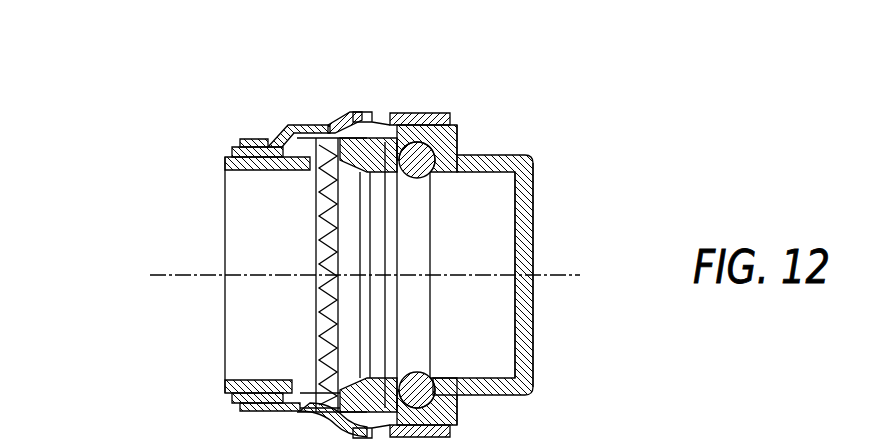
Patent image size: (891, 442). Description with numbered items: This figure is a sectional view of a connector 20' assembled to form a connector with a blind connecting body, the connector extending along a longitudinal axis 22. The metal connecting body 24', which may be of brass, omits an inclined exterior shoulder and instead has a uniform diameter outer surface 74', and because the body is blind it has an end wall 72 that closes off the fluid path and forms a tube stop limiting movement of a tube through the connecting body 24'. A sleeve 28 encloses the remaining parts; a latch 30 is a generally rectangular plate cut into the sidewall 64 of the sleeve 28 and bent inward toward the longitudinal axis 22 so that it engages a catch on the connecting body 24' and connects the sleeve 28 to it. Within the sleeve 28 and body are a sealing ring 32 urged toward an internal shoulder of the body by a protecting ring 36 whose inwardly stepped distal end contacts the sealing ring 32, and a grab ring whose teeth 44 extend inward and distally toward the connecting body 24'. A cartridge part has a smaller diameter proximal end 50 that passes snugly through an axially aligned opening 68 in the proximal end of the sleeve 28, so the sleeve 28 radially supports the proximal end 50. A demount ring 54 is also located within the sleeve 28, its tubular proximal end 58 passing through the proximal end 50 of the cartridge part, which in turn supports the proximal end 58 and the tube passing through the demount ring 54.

The connector 20' is at (548, 255).
The longitudinal axis 22 is at (575, 275).
The connecting body 24' is at (515, 248).
The sleeve 28 is at (295, 118).
The latch 30 is at (405, 122).
The sealing ring 32 is at (428, 350).
The protecting ring 36 is at (375, 383).
The teeth 44 is at (327, 305).
The proximal end of the cartridge part 50 is at (231, 152).
The demount ring 54 is at (255, 378).
The proximal end of the demount ring 58 is at (226, 163).
The sidewall 64 is at (454, 124).
The opening 68 is at (259, 137).
The end wall 72 is at (534, 222).
The uniform diameter outer surface 74' is at (396, 235).